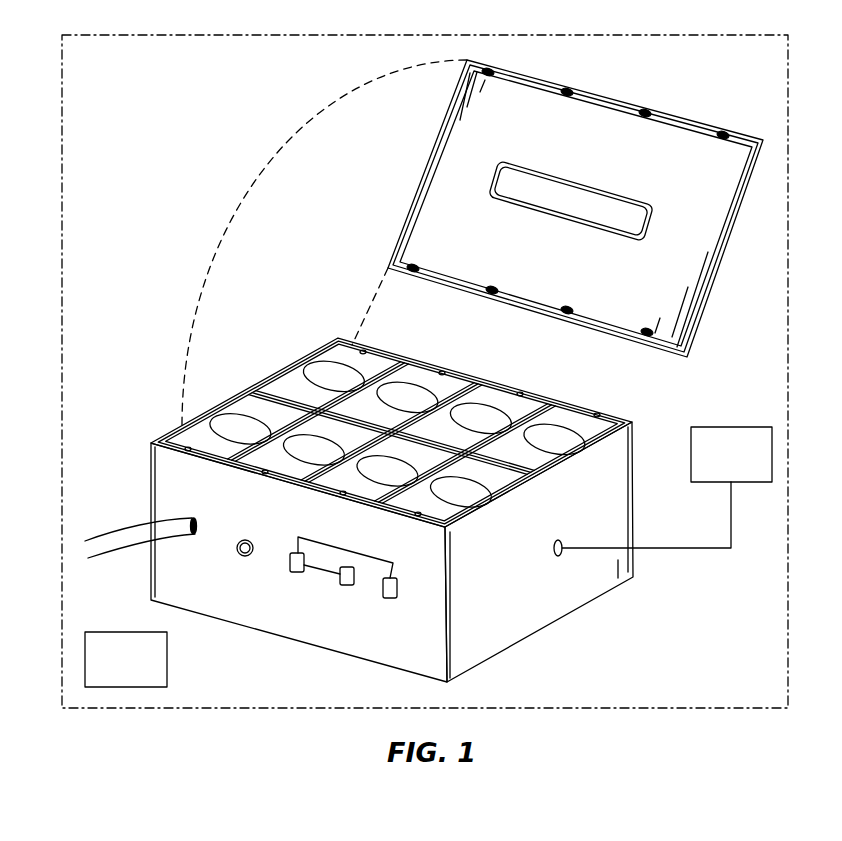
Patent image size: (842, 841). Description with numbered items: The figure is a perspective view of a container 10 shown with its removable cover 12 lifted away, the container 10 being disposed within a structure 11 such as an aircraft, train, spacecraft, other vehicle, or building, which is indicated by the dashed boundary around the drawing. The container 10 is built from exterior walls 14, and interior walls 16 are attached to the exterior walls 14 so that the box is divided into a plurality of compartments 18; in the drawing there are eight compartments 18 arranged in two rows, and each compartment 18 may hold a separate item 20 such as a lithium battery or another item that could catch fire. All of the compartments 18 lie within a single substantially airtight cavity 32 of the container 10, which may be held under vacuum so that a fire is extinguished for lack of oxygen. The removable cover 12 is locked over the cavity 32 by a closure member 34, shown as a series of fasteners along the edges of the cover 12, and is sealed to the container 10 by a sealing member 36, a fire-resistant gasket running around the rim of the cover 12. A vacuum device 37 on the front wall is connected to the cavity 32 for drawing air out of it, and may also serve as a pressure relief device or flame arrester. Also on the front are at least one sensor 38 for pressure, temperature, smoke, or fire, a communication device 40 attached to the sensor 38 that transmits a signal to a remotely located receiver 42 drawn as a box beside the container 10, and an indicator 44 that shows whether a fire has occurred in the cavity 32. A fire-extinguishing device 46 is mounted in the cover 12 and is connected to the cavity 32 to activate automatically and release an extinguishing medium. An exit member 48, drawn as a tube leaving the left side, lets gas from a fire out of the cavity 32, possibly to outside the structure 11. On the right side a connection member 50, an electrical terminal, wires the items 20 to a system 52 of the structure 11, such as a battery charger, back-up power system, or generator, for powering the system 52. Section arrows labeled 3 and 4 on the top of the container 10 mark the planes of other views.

The container 10 is at (658, 596).
The structure 11 is at (790, 126).
The removable cover 12 is at (712, 293).
The exterior walls 14 is at (383, 650).
The interior walls 16 is at (330, 420).
The compartments 18 is at (350, 363).
The items 20 is at (315, 377).
The substantially airtight cavity 32 is at (333, 345).
The closure member 34 is at (568, 90).
The sealing member 36 is at (410, 200).
The vacuum device 37 is at (238, 553).
The sensor 38 is at (293, 573).
The communication device 40 is at (346, 586).
The remotely located receiver 42 is at (126, 659).
The indicator 44 is at (389, 599).
The fire-extinguishing device 46 is at (630, 190).
The exit member 48 is at (190, 520).
The connection member 50 is at (563, 553).
The system 52 is at (667, 487).
The section line 3 is at (445, 504).
The section line 4 is at (380, 482).